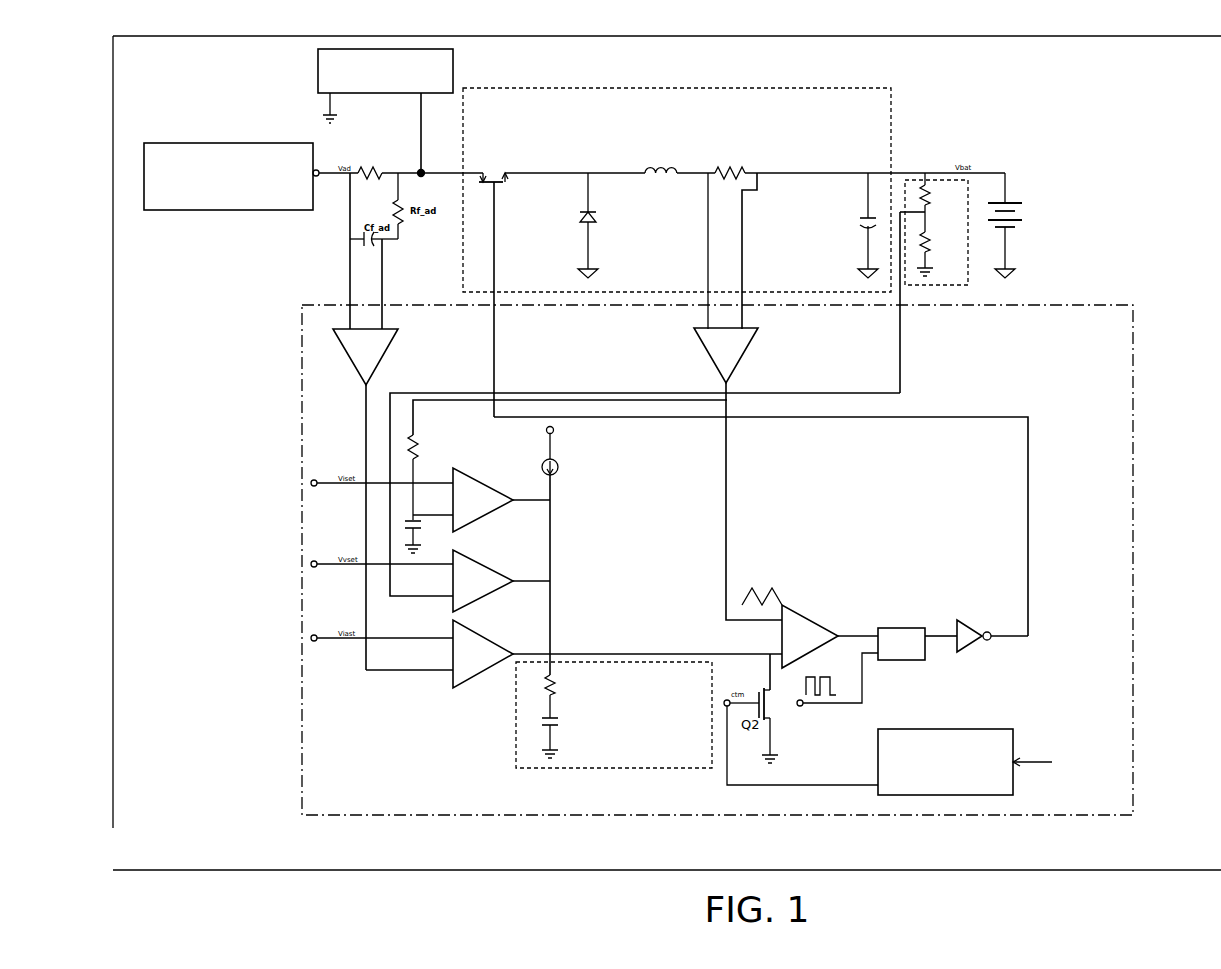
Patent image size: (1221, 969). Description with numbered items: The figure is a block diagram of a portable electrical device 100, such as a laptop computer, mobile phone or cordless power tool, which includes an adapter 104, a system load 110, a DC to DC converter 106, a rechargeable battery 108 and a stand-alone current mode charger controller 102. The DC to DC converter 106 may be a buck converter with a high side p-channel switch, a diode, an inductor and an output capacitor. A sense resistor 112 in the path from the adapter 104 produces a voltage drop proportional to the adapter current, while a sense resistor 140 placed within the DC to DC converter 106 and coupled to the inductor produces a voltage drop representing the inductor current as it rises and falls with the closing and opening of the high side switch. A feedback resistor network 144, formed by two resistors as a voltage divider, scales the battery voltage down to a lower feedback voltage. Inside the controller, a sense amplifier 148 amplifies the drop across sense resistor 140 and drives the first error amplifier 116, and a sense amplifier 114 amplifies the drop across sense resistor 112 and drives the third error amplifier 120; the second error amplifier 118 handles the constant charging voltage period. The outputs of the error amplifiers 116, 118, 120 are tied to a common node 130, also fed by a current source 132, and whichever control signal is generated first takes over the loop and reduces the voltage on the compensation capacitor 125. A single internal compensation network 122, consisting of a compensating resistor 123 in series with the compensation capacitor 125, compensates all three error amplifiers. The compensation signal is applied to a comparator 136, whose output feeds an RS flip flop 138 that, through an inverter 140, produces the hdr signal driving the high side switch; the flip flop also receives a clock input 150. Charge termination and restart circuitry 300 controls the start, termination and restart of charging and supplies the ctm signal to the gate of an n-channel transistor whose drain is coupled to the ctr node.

The portable electrical device 100 is at (1146, 121).
The current mode charger controller 102 is at (1135, 358).
The adapter 104 is at (165, 143).
The DC to DC converter 106 is at (620, 88).
The rechargeable battery 108 is at (1012, 200).
The system load 110 is at (453, 62).
The sense resistor 112 is at (358, 167).
The sense amplifier 114 is at (388, 352).
The first error amplifier 116 is at (462, 470).
The second error amplifier 118 is at (478, 553).
The third error amplifier 120 is at (470, 625).
The internal compensation network 122 is at (571, 725).
The compensating resistor Rc 123 is at (556, 697).
The compensation capacitor Cc 125 is at (556, 730).
The common node 130 is at (553, 652).
The current source 132 is at (559, 465).
The comparator 136 is at (822, 622).
The RS flip flop 138 is at (903, 628).
The sense resistor 140 is at (745, 168).
The feedback resistor network 144 is at (940, 284).
The sense amplifier 148 is at (748, 352).
The clock input clk 150 is at (808, 676).
The charge termination and restart circuitry 300 is at (988, 727).